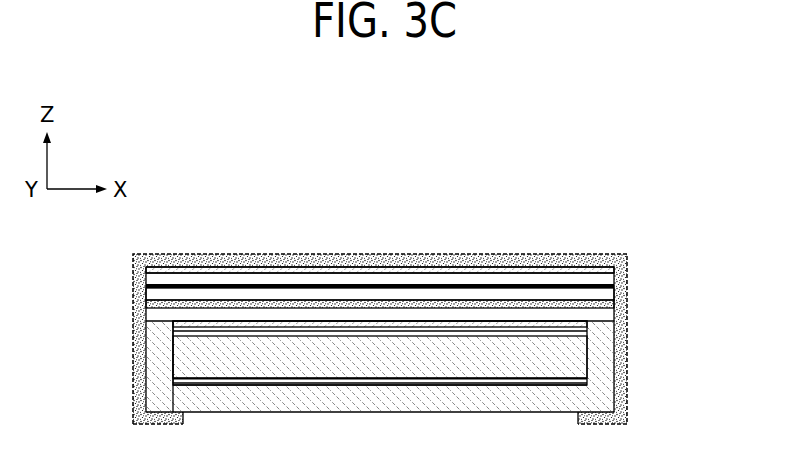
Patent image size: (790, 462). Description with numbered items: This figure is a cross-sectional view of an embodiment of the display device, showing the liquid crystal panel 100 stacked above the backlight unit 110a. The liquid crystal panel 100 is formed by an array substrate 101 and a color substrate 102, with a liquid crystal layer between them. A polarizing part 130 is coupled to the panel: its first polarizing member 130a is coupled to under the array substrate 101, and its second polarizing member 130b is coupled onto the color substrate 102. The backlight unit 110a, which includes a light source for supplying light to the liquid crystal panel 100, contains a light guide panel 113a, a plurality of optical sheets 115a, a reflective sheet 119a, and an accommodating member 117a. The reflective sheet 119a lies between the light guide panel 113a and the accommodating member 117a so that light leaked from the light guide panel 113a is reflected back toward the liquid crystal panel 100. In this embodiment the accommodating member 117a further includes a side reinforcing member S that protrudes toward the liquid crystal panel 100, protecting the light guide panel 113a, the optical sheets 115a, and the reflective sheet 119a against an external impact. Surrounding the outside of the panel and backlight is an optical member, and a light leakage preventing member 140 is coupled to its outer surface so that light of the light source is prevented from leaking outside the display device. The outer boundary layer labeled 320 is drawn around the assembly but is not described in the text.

The liquid crystal panel 100 is at (380, 227).
The array substrate 101 is at (308, 203).
The color substrate 102 is at (297, 283).
The polarizing part 130 is at (380, 240).
The first polarizing member 130a is at (418, 300).
The second polarizing member 130b is at (483, 268).
The outer frame coating 320 is at (570, 258).
The light leakage preventing member 140 is at (133, 387).
The backlight unit 110a is at (434, 357).
The optical sheets 115a is at (566, 329).
The light guide panel 113a is at (572, 356).
The reflective sheet 119a is at (573, 379).
The accommodating member 117a is at (600, 399).
The side reinforcing member S is at (162, 348).